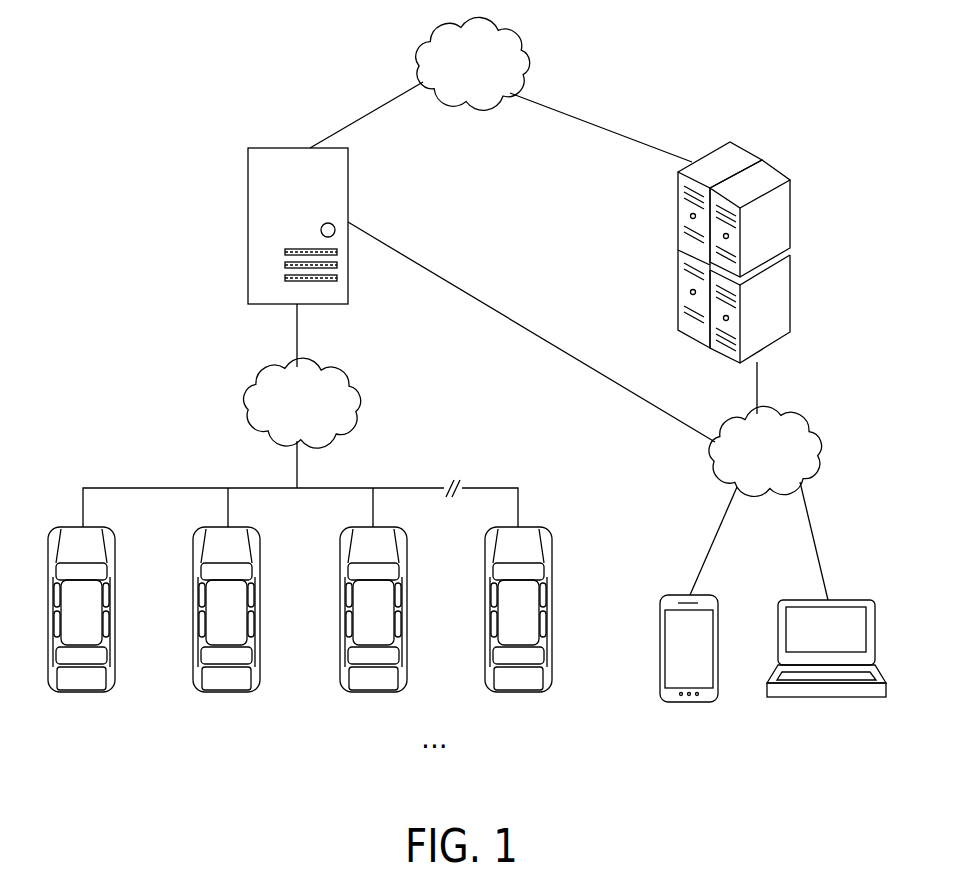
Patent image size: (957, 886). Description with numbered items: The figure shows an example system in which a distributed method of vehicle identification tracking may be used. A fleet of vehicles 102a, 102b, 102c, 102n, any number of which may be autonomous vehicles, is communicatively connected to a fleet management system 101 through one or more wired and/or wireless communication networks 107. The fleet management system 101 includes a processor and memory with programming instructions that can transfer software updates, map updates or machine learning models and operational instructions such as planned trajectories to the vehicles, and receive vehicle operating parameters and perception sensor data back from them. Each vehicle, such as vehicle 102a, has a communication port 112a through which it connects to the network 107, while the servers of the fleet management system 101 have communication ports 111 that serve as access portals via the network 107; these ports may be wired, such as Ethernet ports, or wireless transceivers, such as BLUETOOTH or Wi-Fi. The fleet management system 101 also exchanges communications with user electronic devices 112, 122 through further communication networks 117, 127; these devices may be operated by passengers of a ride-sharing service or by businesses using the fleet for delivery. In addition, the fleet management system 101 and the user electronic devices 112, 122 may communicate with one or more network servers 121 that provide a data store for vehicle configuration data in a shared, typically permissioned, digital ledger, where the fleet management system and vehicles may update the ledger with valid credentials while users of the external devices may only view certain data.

The fleet management system 101 is at (248, 218).
The communication network 117 is at (420, 48).
The communication network 107 is at (255, 378).
The communication port 111 is at (330, 313).
The communication network 127 is at (796, 415).
The network server 121 is at (790, 222).
The communication port 112a is at (68, 510).
The vehicle 102a is at (78, 692).
The vehicle 102b is at (223, 692).
The vehicle 102c is at (370, 692).
The vehicle 102n is at (515, 692).
The user electronic device 112 is at (685, 702).
The user electronic device 122 is at (820, 697).